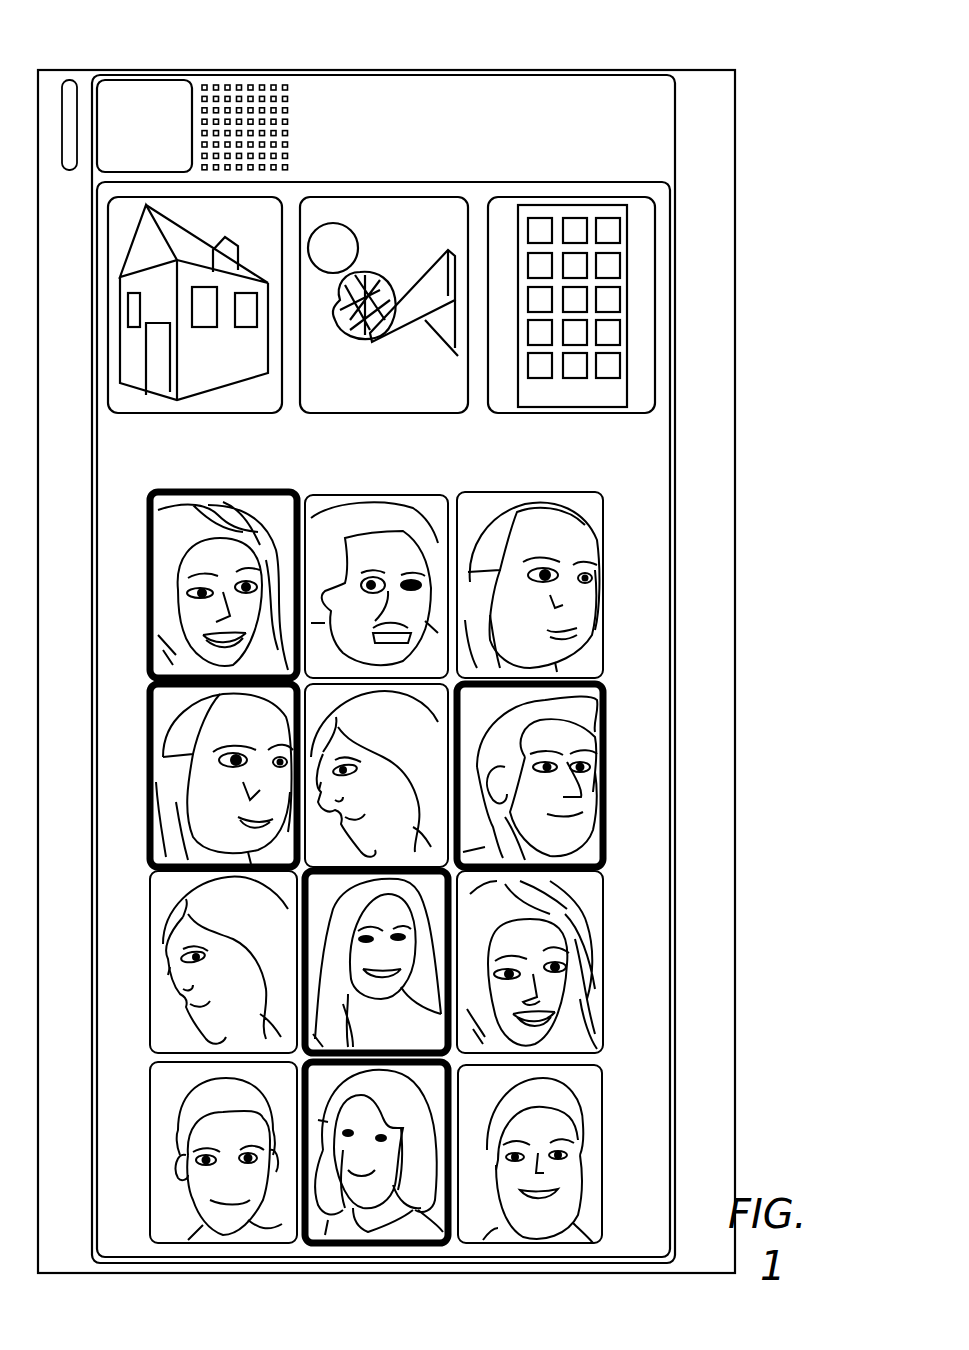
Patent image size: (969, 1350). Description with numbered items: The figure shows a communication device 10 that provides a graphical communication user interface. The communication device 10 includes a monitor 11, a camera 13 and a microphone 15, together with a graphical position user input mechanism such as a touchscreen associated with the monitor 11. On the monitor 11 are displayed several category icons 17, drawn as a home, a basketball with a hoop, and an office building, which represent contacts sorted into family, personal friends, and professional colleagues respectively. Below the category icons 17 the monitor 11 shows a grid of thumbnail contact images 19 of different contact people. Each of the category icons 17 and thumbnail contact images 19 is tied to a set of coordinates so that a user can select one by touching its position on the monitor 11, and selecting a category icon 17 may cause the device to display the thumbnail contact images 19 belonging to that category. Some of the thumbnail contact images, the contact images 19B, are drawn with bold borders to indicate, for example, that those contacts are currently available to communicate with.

The communication device 10 is at (776, 96).
The monitor 11 is at (682, 247).
The camera 13 is at (146, 76).
The microphone 15 is at (251, 78).
The category icons 17 is at (280, 186).
The thumbnail contact images 19 is at (607, 1112).
The highlighted contact images 19B is at (148, 768).